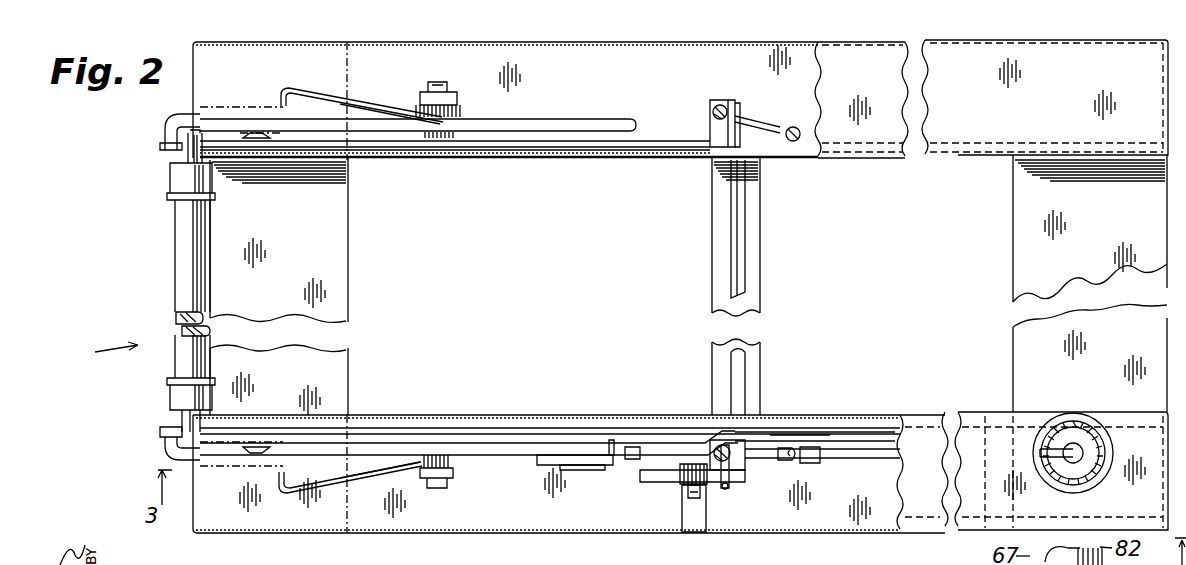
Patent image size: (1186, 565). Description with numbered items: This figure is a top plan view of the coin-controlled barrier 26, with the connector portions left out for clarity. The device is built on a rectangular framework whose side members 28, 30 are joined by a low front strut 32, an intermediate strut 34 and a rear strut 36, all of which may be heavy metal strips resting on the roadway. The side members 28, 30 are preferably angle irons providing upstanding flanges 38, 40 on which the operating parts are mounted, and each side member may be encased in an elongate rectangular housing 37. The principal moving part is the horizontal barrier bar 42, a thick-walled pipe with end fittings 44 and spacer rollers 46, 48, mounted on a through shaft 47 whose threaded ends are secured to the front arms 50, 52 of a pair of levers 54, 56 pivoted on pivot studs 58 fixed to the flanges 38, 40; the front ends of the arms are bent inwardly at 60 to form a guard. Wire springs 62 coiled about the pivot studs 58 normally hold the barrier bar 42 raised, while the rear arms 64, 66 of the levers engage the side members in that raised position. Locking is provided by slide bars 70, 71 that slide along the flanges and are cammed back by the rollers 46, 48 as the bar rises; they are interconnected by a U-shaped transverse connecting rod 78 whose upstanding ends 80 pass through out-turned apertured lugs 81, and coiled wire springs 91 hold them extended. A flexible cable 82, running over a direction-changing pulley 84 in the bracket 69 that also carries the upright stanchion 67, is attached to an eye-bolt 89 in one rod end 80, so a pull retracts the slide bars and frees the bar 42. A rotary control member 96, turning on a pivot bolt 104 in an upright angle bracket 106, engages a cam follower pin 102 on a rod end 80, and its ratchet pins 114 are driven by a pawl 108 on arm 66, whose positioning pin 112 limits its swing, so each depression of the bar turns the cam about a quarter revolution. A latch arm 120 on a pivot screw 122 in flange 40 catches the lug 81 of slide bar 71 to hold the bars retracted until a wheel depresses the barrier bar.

The coin-controlled barrier 26 is at (95, 355).
The side member 28 is at (682, 52).
The side member 30 is at (810, 520).
The front strut 32 is at (334, 241).
The intermediate strut 34 is at (752, 268).
The rear strut 36 is at (1020, 246).
The housing 37 is at (872, 50).
The upstanding flange 38 is at (574, 150).
The upstanding flange 40 is at (578, 426).
The horizontal barrier bar 42 is at (180, 234).
The end fitting 44 is at (172, 180).
The spacer roller 46 is at (186, 155).
The through shaft 47 is at (186, 327).
The spacer roller 48 is at (184, 418).
The front lever arm 50 is at (228, 118).
The front lever arm 52 is at (230, 458).
The lever 54 is at (385, 122).
The lever 56 is at (395, 462).
The pivot stud 58 is at (443, 84).
The inwardly bent front end 60 is at (170, 131).
The wire spring 62 is at (305, 115).
The rear lever arm 64 is at (588, 118).
The rear lever arm 66 is at (563, 452).
The stanchion 67 is at (1106, 452).
The bracket 69 is at (1100, 464).
The locking slide bar 70 is at (532, 148).
The locking slide bar 71 is at (537, 428).
The transverse connecting rod 78 is at (735, 229).
The upstanding end portion 80 is at (718, 104).
The out-turned apertured lug 81 is at (712, 120).
The cable 82 is at (860, 460).
The direction-changing pulley 84 is at (1075, 463).
The eye-bolt 89 is at (785, 460).
The coiled wire spring 91 is at (772, 124).
The rotary control member 96 is at (648, 482).
The cam follower pin 102 is at (728, 478).
The pivot bolt 104 is at (705, 498).
The upright angle bracket 106 is at (688, 522).
The pawl 108 is at (570, 462).
The positioning pin 112 is at (606, 455).
The ratchet pin 114 is at (663, 470).
The latch arm 120 is at (655, 448).
The pivot screw 122 is at (843, 450).